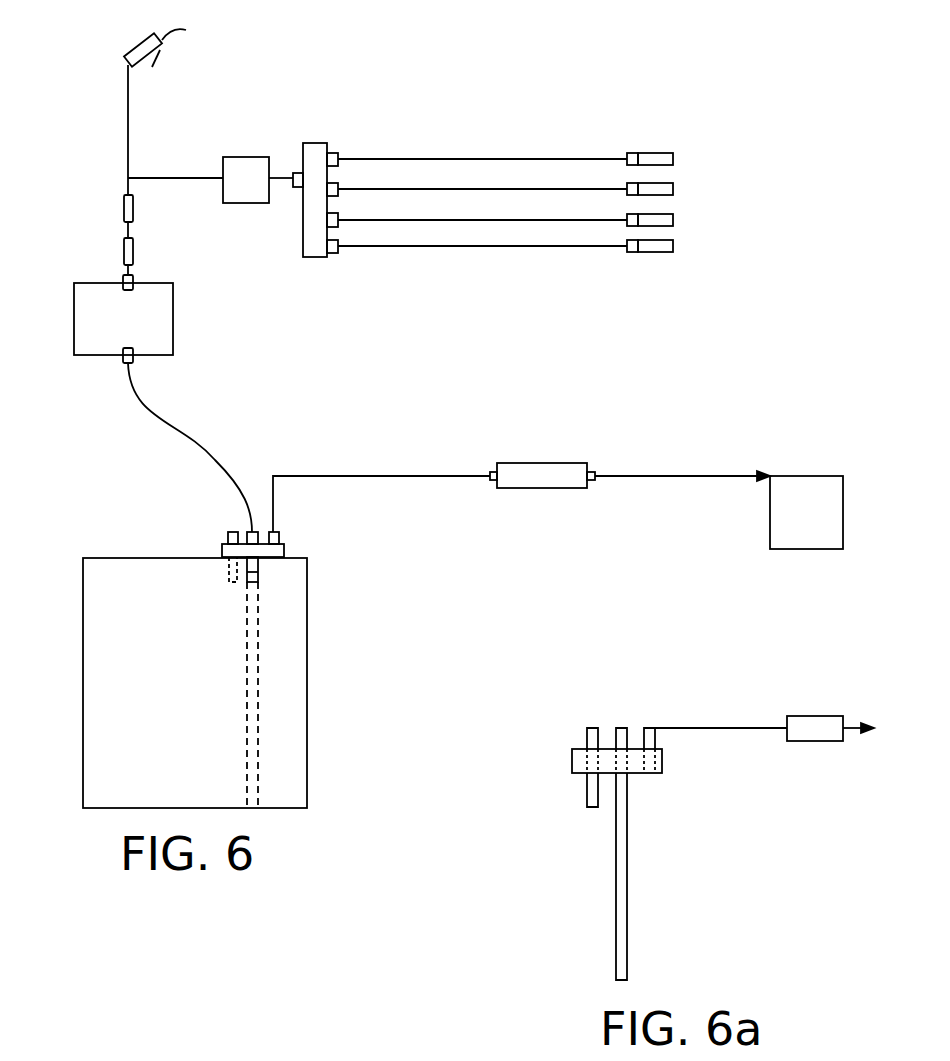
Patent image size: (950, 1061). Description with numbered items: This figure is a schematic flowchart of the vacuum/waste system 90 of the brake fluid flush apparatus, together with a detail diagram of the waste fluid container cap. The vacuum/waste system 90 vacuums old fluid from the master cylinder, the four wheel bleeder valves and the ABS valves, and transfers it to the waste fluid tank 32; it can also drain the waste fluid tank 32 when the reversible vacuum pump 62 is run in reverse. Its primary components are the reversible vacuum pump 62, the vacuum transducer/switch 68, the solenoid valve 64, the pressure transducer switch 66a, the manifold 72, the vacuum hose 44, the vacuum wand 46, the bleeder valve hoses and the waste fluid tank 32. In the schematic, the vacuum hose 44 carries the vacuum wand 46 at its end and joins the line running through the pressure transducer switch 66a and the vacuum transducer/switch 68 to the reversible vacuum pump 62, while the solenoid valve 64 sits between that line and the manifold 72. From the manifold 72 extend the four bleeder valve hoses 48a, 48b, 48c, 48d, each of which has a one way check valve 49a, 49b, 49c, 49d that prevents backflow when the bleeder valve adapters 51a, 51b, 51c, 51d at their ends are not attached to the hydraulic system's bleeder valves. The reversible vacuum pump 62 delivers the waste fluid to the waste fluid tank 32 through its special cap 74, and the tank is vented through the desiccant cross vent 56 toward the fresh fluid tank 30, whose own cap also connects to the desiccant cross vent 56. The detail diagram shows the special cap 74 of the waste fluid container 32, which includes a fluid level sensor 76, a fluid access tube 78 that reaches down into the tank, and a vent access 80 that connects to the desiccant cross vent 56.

In FIG. 6, the fresh fluid tank 30 is at (790, 476).
In FIG. 6, the waste fluid tank 32 is at (83, 690).
In FIG. 6, the vacuum hose 44 is at (128, 133).
In FIG. 6, the vacuum wand 46 is at (130, 50).
In FIG. 6, the bleeder valve hose 48a is at (523, 159).
In FIG. 6, the bleeder valve hose 48b is at (460, 189).
In FIG. 6, the bleeder valve hose 48c is at (463, 220).
In FIG. 6, the bleeder valve hose 48d is at (540, 246).
In FIG. 6, the one way check valve 49a is at (632, 153).
In FIG. 6, the one way check valve 49b is at (633, 183).
In FIG. 6, the one way check valve 49c is at (633, 214).
In FIG. 6, the one way check valve 49d is at (634, 252).
In FIG. 6, the bleeder valve adapter 51a is at (660, 153).
In FIG. 6, the bleeder valve adapter 51b is at (673, 189).
In FIG. 6, the bleeder valve adapter 51c is at (673, 220).
In FIG. 6, the bleeder valve adapter 51d is at (673, 246).
In FIG. 6, the desiccant cross vent 56 is at (547, 488).
In FIG. 6a, the desiccant cross vent 56 is at (820, 741).
In FIG. 6, the reversible vacuum pump 62 is at (95, 343).
In FIG. 6, the solenoid valve 64 is at (244, 157).
In FIG. 6, the pressure transducer switch 66a is at (124, 208).
In FIG. 6, the vacuum transducer/switch 68 is at (134, 252).
In FIG. 6, the manifold 72 is at (313, 143).
In FIG. 6, the special cap 74 is at (284, 551).
In FIG. 6a, the special cap 74 is at (572, 760).
In FIG. 6a, the fluid level sensor 76 is at (587, 795).
In FIG. 6, the fluid access tube 78 is at (256, 695).
In FIG. 6a, the fluid access tube 78 is at (627, 897).
In FIG. 6a, the vent access 80 is at (662, 775).
In FIG. 6a, the vacuum/waste system 90 is at (441, 865).